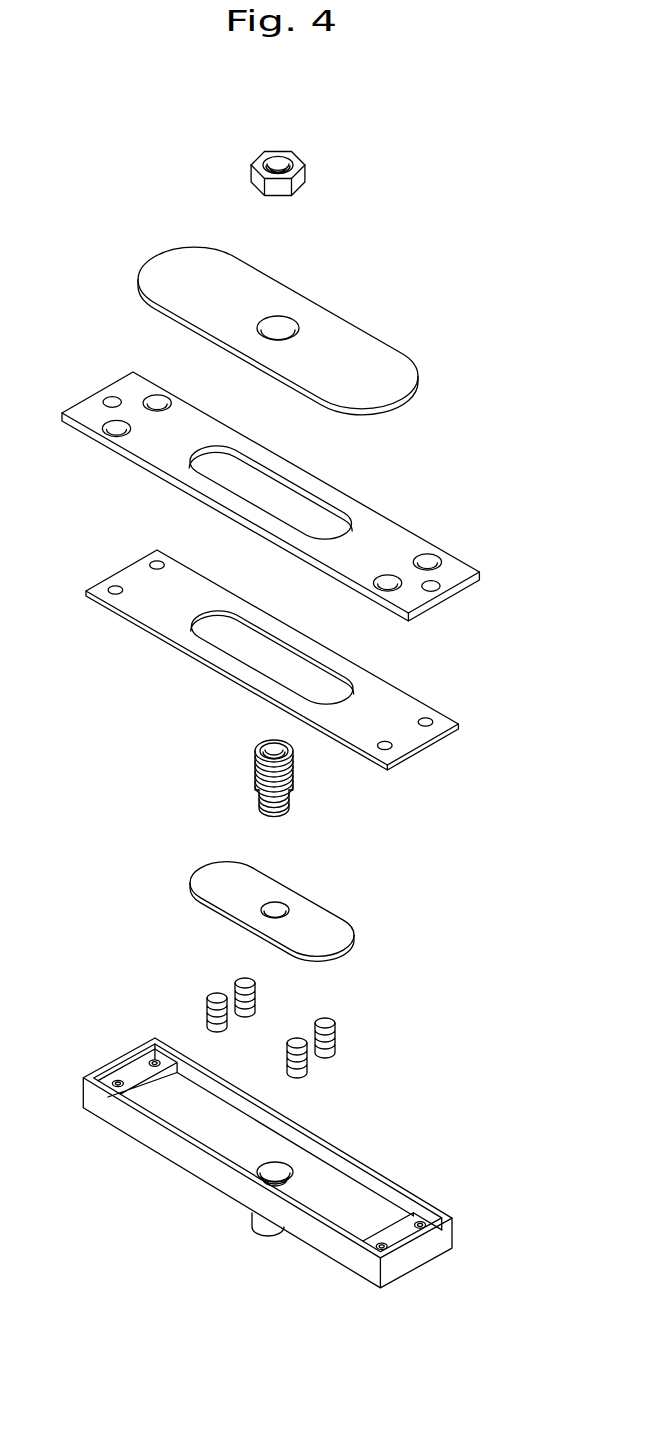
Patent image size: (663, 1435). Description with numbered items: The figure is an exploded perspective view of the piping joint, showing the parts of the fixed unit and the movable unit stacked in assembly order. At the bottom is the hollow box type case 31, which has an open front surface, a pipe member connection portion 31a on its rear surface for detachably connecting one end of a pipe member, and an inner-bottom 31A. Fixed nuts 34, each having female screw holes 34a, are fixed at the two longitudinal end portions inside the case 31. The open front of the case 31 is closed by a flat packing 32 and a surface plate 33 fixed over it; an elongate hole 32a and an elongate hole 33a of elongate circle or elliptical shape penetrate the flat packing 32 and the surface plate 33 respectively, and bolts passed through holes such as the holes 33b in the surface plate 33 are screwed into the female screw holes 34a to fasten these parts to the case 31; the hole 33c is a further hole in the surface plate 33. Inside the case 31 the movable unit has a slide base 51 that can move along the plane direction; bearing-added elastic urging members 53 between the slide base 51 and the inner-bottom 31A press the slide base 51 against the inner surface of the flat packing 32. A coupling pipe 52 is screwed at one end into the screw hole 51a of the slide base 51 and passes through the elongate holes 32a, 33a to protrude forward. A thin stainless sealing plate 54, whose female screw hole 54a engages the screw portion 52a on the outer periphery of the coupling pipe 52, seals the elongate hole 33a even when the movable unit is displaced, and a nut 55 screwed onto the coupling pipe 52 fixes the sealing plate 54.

The case 31 is at (427, 1265).
The inner-bottom of the case 31A is at (363, 1200).
The pipe member connection portion 31a is at (252, 1228).
The flat packing 32 is at (120, 567).
The elongate hole of the flat packing 32a is at (317, 670).
The surface plate 33 is at (120, 383).
The elongate hole of the surface plate 33a is at (293, 492).
The holes of the surface plate 33b is at (430, 557).
The hole 33c is at (438, 582).
The fixed nuts 34 is at (135, 1080).
The female screw holes 34a is at (153, 1061).
The slide base 51 is at (208, 868).
The screw hole of the slide base 51a is at (280, 903).
The coupling pipe 52 is at (258, 775).
The screw portion of the coupling pipe 52a is at (290, 788).
The bearing-added elastic urging members 53 is at (240, 982).
The sealing plate 54 is at (164, 258).
The female screw hole of the sealing plate 54a is at (289, 313).
The nut 55 is at (252, 168).